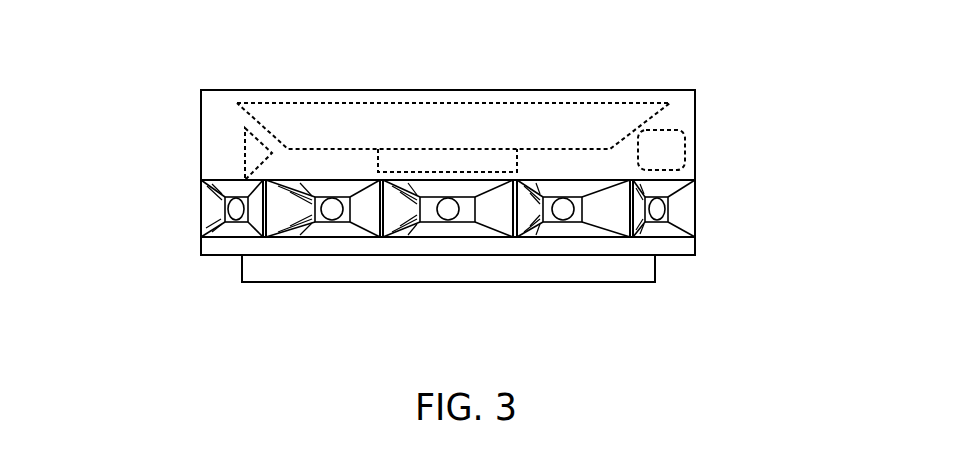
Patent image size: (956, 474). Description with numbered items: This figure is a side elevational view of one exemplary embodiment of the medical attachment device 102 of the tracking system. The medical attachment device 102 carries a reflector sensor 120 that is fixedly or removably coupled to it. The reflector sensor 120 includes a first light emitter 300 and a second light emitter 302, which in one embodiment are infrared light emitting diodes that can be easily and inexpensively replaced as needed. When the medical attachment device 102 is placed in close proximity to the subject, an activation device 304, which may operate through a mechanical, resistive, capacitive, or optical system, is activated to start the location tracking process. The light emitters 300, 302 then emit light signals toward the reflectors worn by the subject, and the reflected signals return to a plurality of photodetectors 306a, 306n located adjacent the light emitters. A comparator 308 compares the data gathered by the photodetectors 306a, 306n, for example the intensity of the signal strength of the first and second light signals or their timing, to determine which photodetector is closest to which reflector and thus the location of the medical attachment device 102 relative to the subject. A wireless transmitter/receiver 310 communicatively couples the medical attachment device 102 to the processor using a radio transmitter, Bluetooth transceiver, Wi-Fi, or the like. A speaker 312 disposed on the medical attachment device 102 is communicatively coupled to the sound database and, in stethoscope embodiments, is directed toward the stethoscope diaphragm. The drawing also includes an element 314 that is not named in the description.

The medical attachment device 102 is at (470, 37).
The speaker 312 is at (575, 107).
The comparator 308 is at (245, 159).
The wireless transmitter/receiver 310 is at (678, 148).
The reflector sensor 120 is at (212, 215).
The speaker mounting plate 314 is at (218, 248).
The activation device 304 is at (288, 270).
The photodetector 306n is at (343, 205).
The second light emitter 302 is at (455, 210).
The photodetector 306a is at (570, 210).
The first light emitter 300 is at (426, 256).